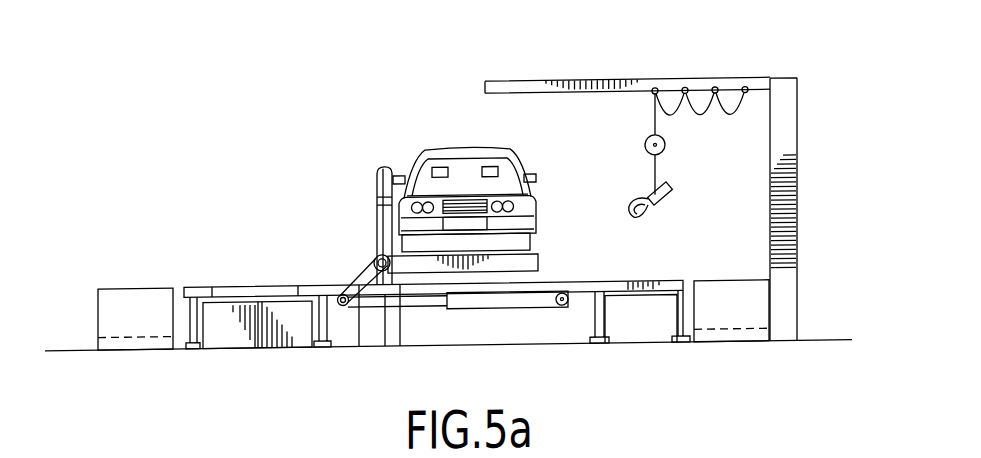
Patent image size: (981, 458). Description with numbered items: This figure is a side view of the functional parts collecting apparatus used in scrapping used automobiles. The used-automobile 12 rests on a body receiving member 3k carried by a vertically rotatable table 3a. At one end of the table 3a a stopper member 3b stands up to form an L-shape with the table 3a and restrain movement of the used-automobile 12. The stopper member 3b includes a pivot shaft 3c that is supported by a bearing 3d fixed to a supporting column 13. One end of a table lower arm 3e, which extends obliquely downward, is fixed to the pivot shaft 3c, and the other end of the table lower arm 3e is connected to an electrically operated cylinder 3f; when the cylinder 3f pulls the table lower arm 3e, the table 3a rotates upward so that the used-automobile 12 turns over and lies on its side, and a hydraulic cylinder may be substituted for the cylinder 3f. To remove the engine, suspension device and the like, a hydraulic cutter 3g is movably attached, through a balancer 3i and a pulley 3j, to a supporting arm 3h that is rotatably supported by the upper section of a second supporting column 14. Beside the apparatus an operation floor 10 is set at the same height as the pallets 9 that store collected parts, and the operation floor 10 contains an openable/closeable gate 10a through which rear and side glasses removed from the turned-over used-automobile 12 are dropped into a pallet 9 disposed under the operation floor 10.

The pallet 9 is at (142, 297).
The operation floor 10 is at (630, 306).
The openable/closeable gate 10a is at (230, 296).
The used-automobile 12 is at (450, 156).
The supporting column 13 is at (401, 318).
The supporting column 14 is at (797, 204).
The vertically rotatable table 3a is at (538, 270).
The stopper member 3b is at (377, 186).
The pivot shaft 3c is at (382, 277).
The bearing 3d is at (376, 263).
The table lower arm 3e is at (342, 299).
The electrically operated cylinder 3f is at (518, 312).
The hydraulic cutter 3g is at (667, 213).
The supporting arm 3h is at (537, 92).
The balancer 3i is at (666, 153).
The pulley 3j is at (685, 97).
The body receiving member 3k is at (524, 252).